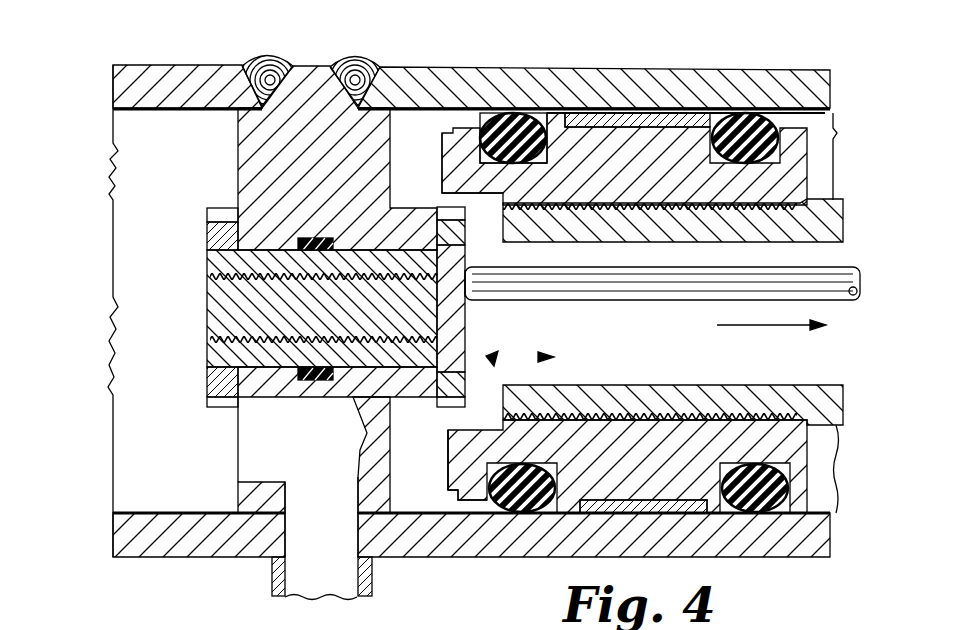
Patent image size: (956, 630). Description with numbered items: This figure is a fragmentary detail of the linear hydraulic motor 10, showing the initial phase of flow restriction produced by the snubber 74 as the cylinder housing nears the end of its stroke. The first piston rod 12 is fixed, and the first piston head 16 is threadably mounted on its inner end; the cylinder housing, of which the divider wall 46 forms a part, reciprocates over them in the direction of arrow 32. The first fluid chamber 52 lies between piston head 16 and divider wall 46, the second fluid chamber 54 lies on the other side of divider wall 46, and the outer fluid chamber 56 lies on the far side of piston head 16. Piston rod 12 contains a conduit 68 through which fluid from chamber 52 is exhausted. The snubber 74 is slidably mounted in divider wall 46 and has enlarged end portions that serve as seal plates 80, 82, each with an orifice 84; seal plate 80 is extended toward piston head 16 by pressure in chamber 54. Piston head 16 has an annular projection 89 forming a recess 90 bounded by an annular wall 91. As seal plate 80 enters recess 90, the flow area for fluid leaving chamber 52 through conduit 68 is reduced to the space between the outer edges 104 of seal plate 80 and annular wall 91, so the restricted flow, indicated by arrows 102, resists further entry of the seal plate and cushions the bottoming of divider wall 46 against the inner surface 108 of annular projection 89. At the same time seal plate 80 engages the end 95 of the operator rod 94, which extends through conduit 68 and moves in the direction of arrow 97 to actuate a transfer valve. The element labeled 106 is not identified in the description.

The linear hydraulic motor 10 is at (407, 50).
The first piston rod 12 is at (722, 228).
The first piston head 16 is at (608, 157).
The arrow 32 is at (500, 52).
The divider wall 46 is at (298, 100).
The first fluid chamber 52 is at (407, 133).
The second fluid chamber 54 is at (196, 156).
The outer fluid chamber 56 is at (817, 150).
The conduit 68 is at (653, 247).
The snubber 74 is at (237, 308).
The seal plate 80 is at (452, 303).
The seal plate 82 is at (223, 373).
The orifice 84 is at (223, 240).
The annular projection 89 is at (476, 190).
The recess 90 is at (540, 357).
The annular wall 91 is at (560, 160).
The operator rod 94 is at (636, 283).
The inner end of operator rod 95 is at (455, 322).
The arrow 97 is at (745, 325).
The arrows 102 is at (447, 473).
The outer edges of seal plate 104 is at (453, 207).
The lower O-ring 106 is at (503, 433).
The inner surface of annular projection 108 is at (442, 167).